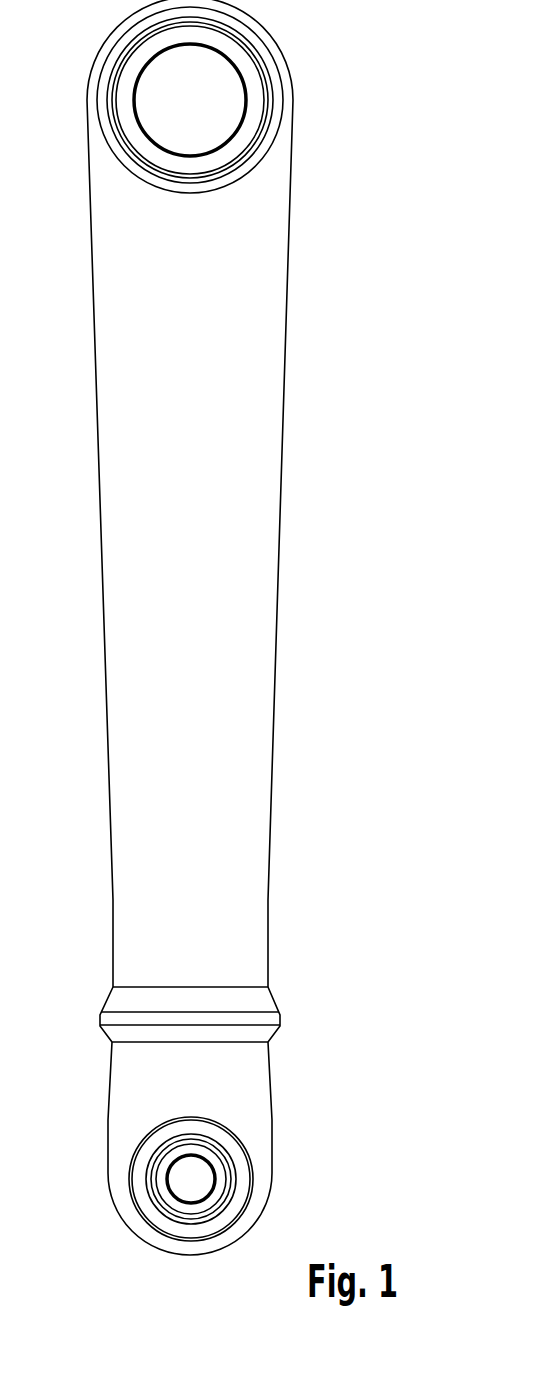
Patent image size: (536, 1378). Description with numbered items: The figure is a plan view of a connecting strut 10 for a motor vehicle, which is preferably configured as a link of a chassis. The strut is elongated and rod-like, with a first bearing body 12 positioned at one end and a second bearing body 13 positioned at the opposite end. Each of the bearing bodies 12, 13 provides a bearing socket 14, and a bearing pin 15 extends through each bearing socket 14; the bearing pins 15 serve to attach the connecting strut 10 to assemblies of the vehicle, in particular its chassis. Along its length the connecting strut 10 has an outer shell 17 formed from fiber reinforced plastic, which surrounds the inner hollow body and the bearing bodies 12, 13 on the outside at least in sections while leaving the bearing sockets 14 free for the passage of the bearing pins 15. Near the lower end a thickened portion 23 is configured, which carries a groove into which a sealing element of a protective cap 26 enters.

The connecting strut 10 is at (213, 627).
The first bearing body 12 is at (273, 62).
The second bearing body 13 is at (242, 1183).
The bearing socket 14 is at (160, 118).
The bearing pin 15 is at (245, 132).
The outer shell 17 is at (265, 351).
The thickened portion 23 is at (292, 990).
The protective cap 26 is at (255, 1089).